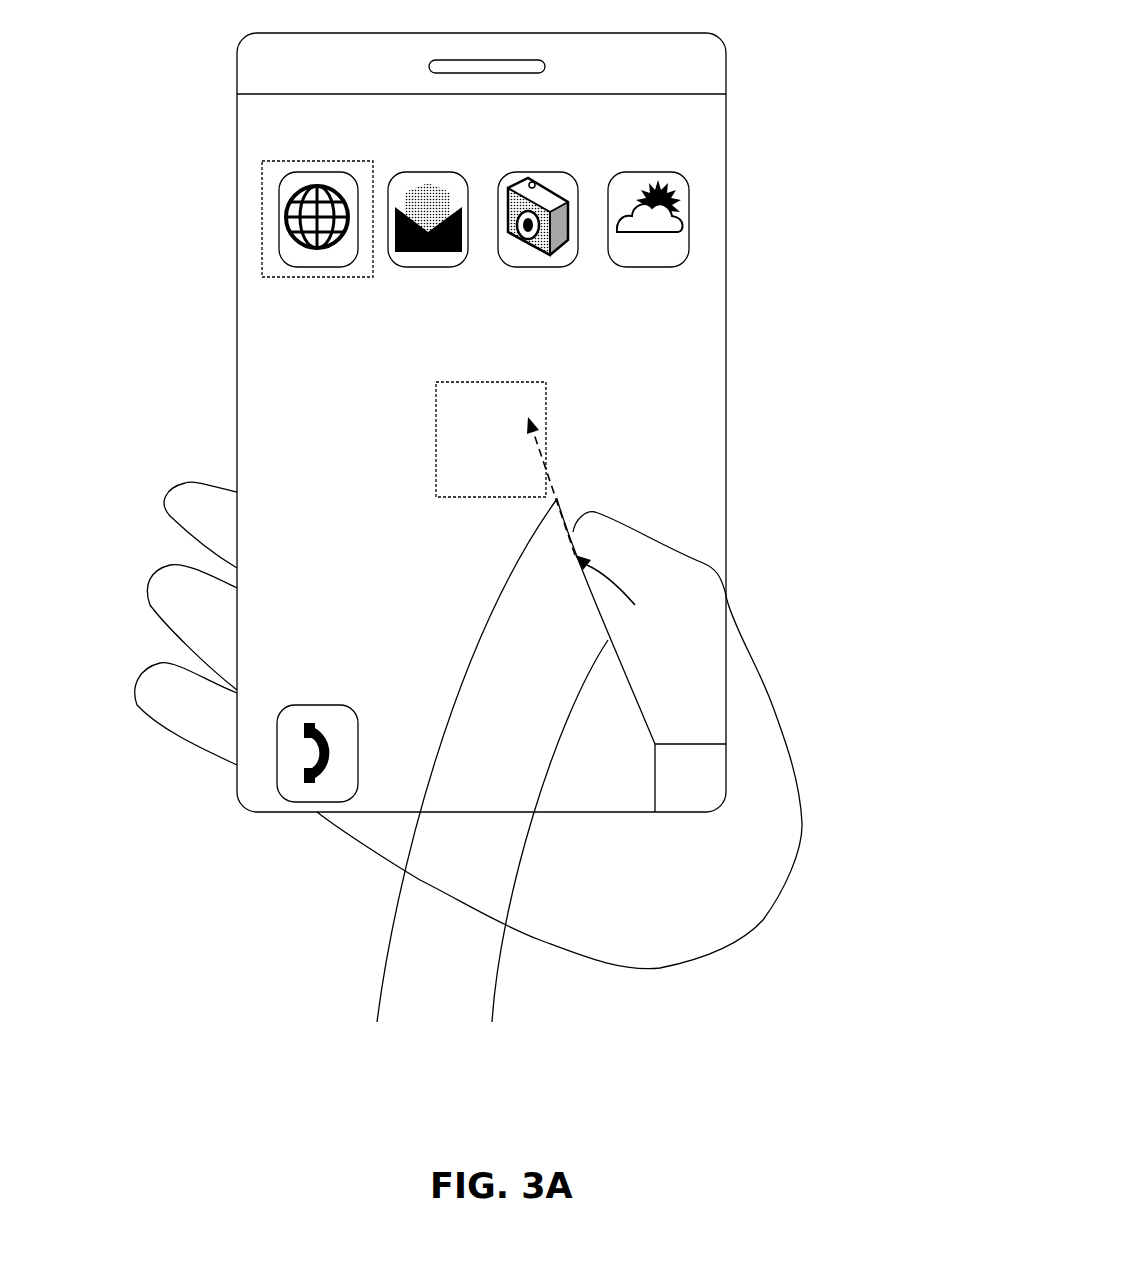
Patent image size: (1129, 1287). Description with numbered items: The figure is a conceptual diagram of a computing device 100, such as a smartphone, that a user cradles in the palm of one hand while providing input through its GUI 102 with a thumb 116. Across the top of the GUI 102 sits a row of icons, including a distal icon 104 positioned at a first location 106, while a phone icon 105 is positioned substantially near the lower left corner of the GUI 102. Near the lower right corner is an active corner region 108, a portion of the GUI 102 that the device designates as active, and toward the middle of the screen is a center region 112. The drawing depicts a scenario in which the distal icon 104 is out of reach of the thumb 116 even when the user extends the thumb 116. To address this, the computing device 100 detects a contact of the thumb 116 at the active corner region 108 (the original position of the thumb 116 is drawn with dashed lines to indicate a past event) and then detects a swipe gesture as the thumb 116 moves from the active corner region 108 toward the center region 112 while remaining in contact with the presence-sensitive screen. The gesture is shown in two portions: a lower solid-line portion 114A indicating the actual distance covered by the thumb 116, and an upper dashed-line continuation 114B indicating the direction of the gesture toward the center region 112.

The computing device 100 is at (721, 38).
The GUI 102 is at (704, 150).
The distal icon 104 is at (282, 185).
The phone icon 105 is at (278, 788).
The first location 106 is at (263, 240).
The active corner region 108 is at (697, 778).
The center region 112 is at (435, 438).
The lower solid-line portion 114A is at (536, 851).
The upper dashed-line continuation 114B is at (501, 781).
The thumb 116 is at (675, 713).